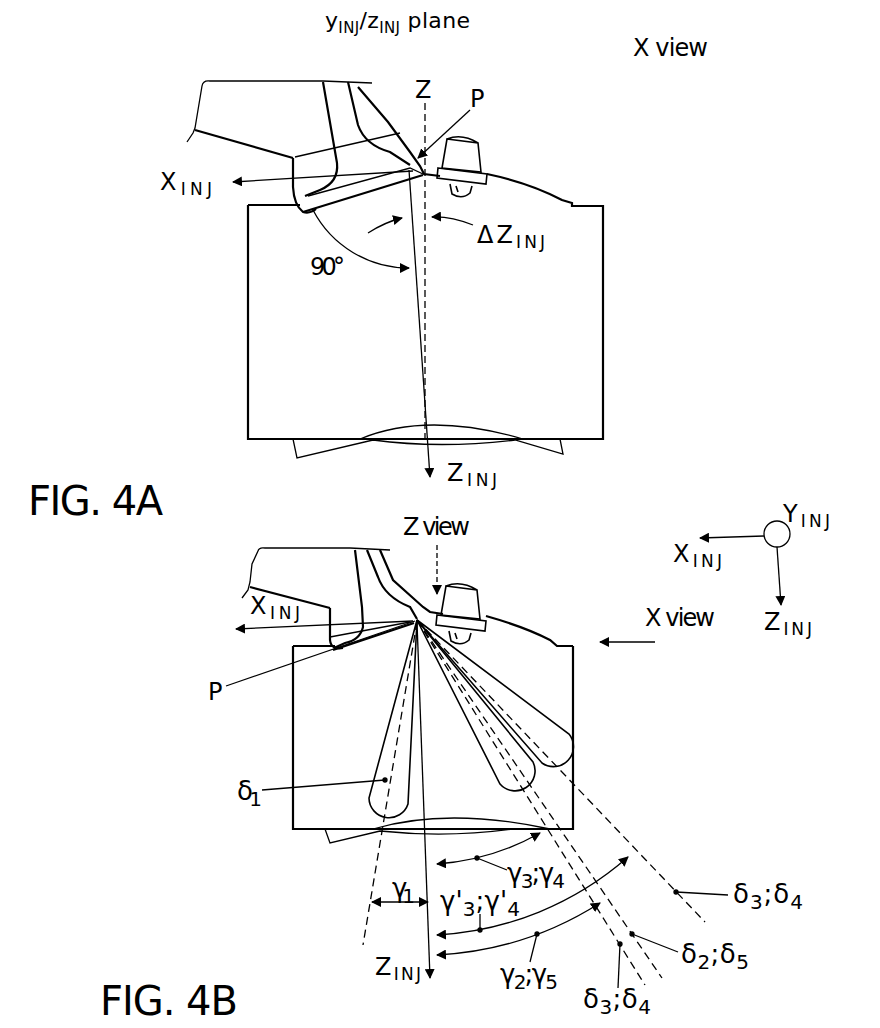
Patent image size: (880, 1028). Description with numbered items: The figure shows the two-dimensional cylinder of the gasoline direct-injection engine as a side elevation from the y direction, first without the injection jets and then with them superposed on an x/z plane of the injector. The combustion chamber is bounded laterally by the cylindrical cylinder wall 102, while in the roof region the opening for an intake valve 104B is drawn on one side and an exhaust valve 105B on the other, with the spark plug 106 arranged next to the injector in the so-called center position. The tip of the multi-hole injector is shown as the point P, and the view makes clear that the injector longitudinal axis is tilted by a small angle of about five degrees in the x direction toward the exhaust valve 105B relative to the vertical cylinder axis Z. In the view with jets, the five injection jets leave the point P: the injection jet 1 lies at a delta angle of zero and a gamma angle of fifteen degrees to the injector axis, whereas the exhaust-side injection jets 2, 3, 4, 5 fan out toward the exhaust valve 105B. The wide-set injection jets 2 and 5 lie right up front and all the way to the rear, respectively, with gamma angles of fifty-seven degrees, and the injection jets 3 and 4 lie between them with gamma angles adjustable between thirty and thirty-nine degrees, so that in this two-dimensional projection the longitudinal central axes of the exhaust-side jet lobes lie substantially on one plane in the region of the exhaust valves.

In FIG. 4A, the cylinder wall 102 is at (248, 333).
In FIG. 4B, the cylinder wall 102 is at (433, 744).
In FIG. 4A, the intake valve 104B is at (353, 147).
In FIG. 4B, the intake valve 104B is at (365, 583).
In FIG. 4A, the exhaust valve 105B is at (545, 200).
In FIG. 4B, the exhaust valve 105B is at (518, 645).
In FIG. 4A, the spark plug 106 is at (466, 158).
In FIG. 4B, the spark plug 106 is at (465, 605).
In FIG. 4B, the injection jet 1 is at (393, 719).
In FIG. 4B, the injection jet 2 is at (495, 693).
In FIG. 4B, the injection jet 3 is at (476, 707).
In FIG. 4B, the injection jet 4 is at (476, 707).
In FIG. 4B, the injection jet 5 is at (495, 693).